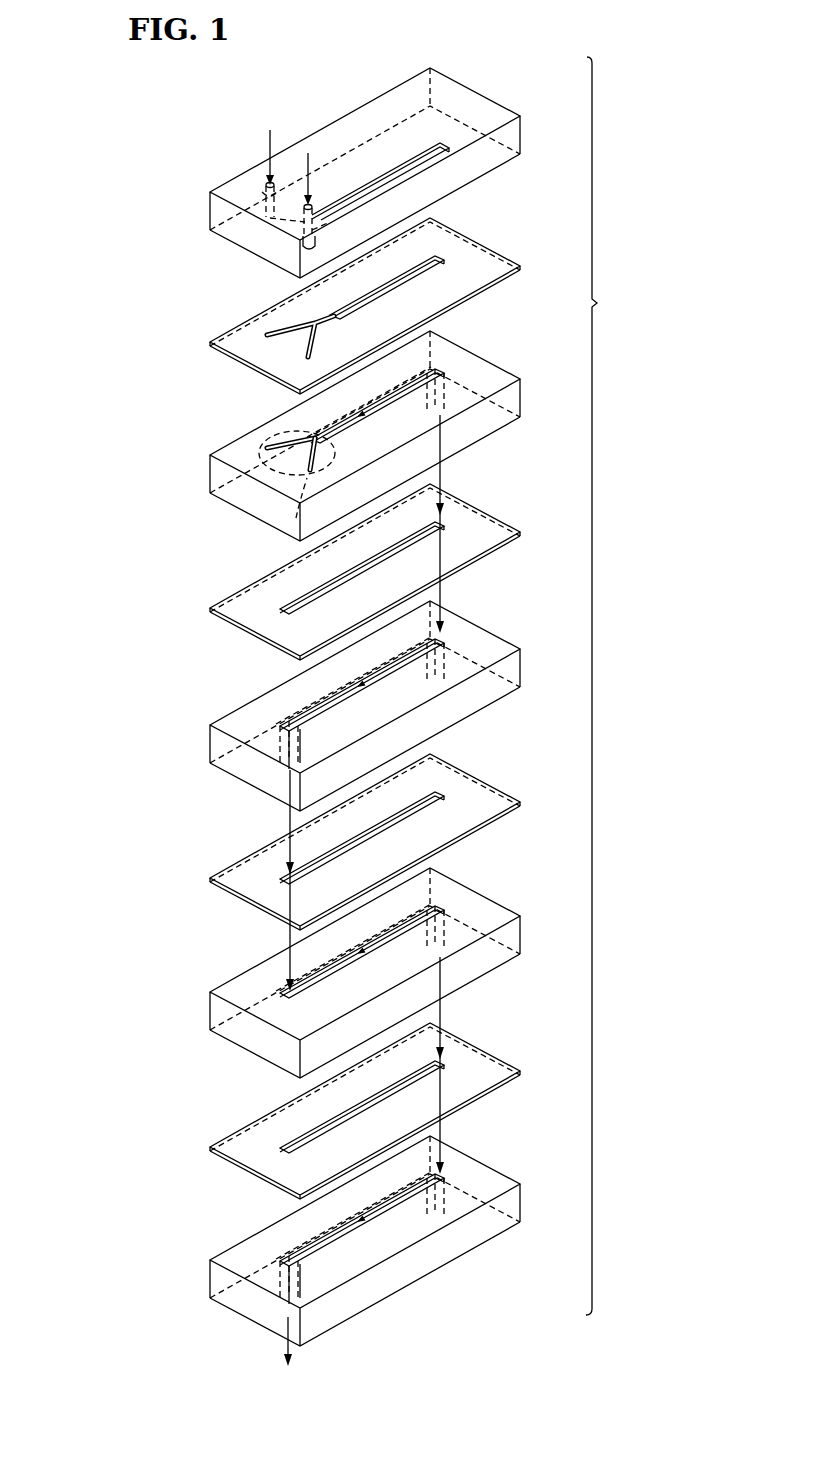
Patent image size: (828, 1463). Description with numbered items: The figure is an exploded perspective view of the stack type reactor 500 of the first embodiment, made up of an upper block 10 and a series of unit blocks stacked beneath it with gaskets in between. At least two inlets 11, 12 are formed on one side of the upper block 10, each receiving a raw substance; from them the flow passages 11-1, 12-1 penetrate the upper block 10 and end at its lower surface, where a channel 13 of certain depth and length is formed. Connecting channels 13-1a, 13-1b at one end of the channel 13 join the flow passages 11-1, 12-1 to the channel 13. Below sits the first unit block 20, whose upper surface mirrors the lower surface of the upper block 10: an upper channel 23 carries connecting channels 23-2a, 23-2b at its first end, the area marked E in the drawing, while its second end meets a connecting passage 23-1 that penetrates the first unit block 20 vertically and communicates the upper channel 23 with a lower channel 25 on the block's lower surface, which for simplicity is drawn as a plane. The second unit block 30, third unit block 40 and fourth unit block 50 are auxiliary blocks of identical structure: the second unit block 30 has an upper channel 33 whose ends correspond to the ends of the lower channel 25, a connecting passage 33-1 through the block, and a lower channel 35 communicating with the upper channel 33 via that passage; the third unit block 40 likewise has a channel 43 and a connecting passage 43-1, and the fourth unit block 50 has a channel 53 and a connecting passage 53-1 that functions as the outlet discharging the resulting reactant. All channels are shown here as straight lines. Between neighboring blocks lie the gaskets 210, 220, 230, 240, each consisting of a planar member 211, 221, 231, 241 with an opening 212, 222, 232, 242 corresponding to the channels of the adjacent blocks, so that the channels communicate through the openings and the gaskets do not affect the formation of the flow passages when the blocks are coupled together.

The stack type reactor 500 is at (613, 686).
The upper block 10 is at (473, 102).
The inlet 11 is at (267, 173).
The inlet 12 is at (306, 204).
The channel 13 is at (403, 167).
The flow passage 11-1 is at (262, 203).
The flow passage 12-1 is at (302, 248).
The connecting channel 13-1a is at (266, 222).
The connecting channel 13-1b is at (306, 262).
The gasket 210 is at (394, 293).
The planar member 211 is at (480, 250).
The opening 212 is at (336, 312).
The first unit block 20 is at (487, 370).
The upper channel 23 is at (427, 370).
The connecting passage 23-1 is at (474, 414).
The connecting channel 23-2a is at (268, 446).
The connecting channel 23-2b is at (300, 497).
The inlet region E is at (243, 461).
The lower channel 25 is at (297, 515).
The gasket 220 is at (394, 559).
The planar member 221 is at (480, 518).
The opening 222 is at (336, 574).
The second unit block 30 is at (497, 645).
The upper channel 33 is at (444, 641).
The lower channel 35 is at (438, 686).
The connecting passage 33-1 is at (280, 742).
The gasket 230 is at (394, 829).
The planar member 231 is at (480, 788).
The opening 232 is at (336, 844).
The third unit block 40 is at (445, 882).
The channel 43 is at (288, 987).
The third through hole 43-1 is at (453, 917).
The gasket 240 is at (394, 1096).
The planar member 241 is at (480, 1057).
The opening 242 is at (336, 1115).
The fourth unit block 50 is at (422, 1277).
The channel 53 is at (431, 1188).
The connecting passage 53-1 is at (280, 1282).